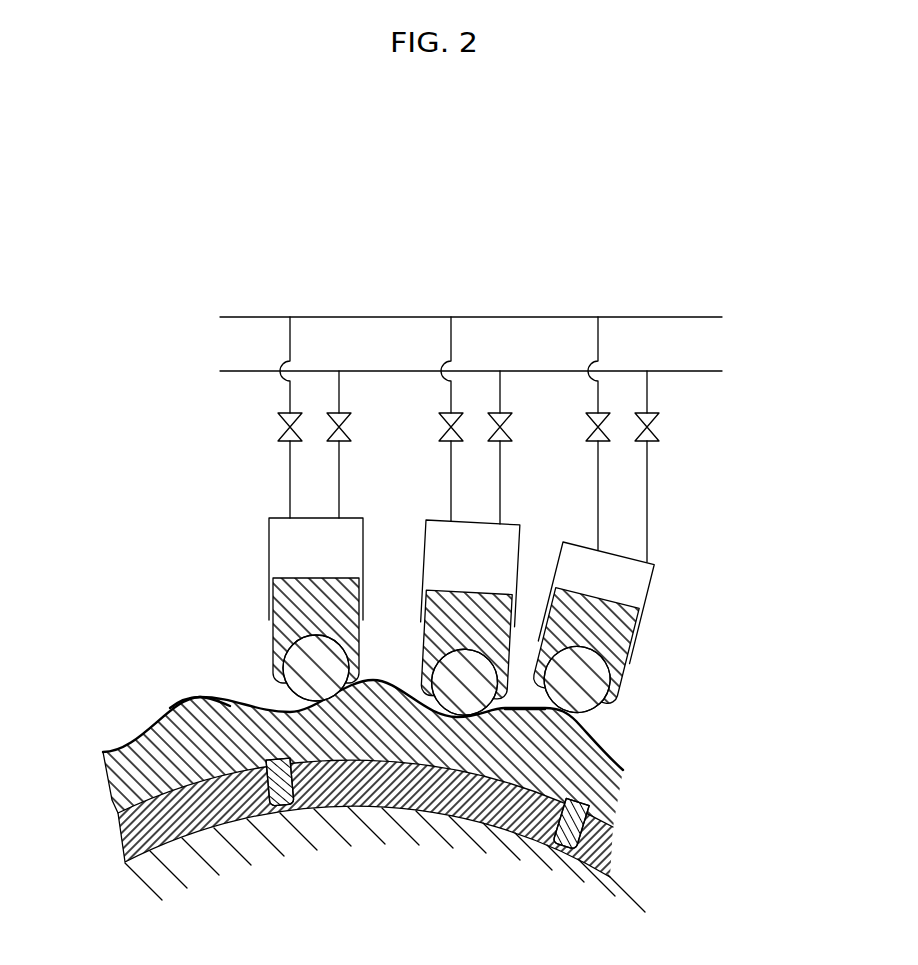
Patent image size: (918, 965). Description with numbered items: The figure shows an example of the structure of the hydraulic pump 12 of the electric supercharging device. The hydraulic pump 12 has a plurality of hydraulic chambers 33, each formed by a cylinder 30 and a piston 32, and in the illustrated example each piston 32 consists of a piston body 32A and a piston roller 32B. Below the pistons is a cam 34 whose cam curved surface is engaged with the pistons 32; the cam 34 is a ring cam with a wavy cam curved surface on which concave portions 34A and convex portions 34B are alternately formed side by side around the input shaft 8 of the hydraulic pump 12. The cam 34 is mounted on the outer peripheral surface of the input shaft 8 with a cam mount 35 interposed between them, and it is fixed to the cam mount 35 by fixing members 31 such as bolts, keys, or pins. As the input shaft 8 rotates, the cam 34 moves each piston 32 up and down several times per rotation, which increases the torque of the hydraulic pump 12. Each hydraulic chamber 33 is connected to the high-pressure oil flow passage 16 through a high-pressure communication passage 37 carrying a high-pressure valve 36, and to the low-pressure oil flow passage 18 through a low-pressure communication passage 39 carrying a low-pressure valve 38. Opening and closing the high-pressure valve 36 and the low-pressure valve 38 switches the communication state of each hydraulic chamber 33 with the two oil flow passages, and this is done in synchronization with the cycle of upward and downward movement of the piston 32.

The input shaft 8 is at (157, 872).
The hydraulic pump 12 is at (110, 554).
The high-pressure oil flow passage 16 is at (700, 371).
The low-pressure oil flow passage 18 is at (700, 316).
The cylinder 30 is at (465, 602).
The fixing member 31 is at (264, 818).
The piston 32 is at (429, 713).
The piston body 32A is at (622, 681).
The piston roller 32B is at (567, 716).
The hydraulic chamber 33 is at (285, 562).
The cam 34 is at (400, 732).
The concave portion 34A is at (122, 750).
The convex portion 34B is at (200, 696).
The cam mount 35 is at (137, 793).
The high-pressure valve 36 is at (345, 437).
The high-pressure communication passage 37 is at (340, 387).
The low-pressure valve 38 is at (280, 431).
The low-pressure communication passage 39 is at (291, 339).